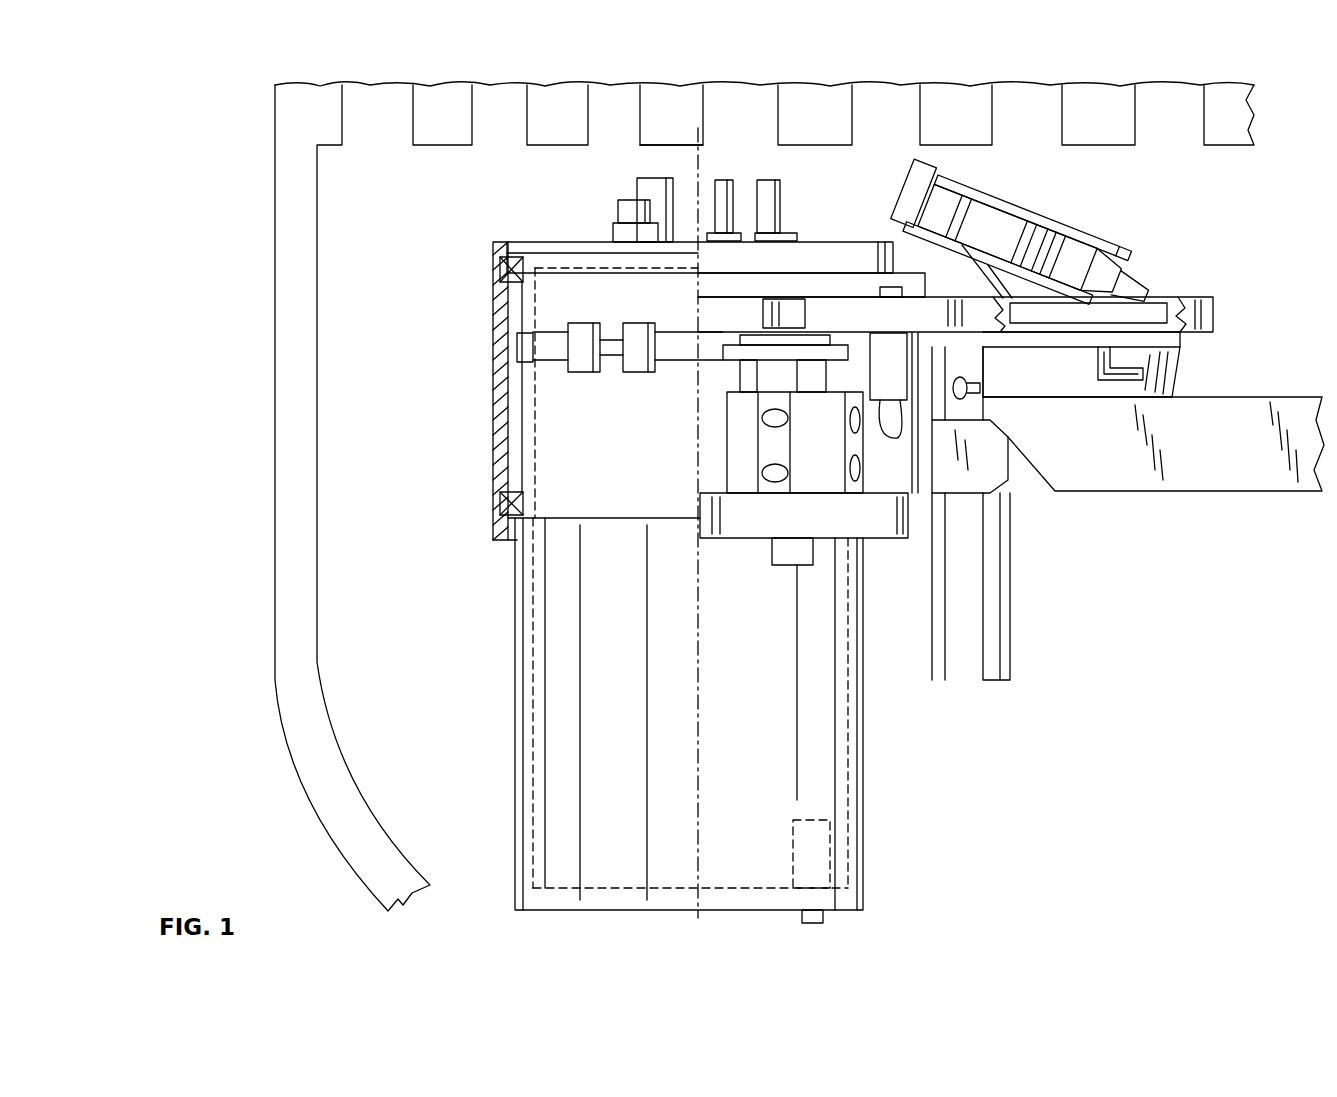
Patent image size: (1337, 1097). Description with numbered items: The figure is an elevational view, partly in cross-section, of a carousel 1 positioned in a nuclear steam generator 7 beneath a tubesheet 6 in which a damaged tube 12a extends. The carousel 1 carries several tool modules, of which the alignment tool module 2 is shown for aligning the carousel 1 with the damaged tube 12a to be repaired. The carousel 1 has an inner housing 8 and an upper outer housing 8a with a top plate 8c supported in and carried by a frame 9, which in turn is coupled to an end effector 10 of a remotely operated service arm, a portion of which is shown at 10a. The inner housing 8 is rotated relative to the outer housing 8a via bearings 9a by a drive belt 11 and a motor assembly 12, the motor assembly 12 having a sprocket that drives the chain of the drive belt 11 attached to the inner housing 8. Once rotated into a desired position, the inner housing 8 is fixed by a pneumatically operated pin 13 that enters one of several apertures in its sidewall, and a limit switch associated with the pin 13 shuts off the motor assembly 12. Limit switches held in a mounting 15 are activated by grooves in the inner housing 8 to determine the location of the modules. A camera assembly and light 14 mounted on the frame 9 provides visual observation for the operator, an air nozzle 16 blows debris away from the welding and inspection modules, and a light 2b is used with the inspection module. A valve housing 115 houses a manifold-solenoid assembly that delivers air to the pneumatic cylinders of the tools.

The carousel 1 is at (865, 805).
The alignment tool module 2 is at (623, 207).
The light 2b is at (772, 183).
The tubesheet 6 is at (458, 132).
The nuclear steam generator 7 is at (312, 441).
The inner housing 8 is at (868, 872).
The upper outer housing 8a is at (495, 448).
The top plate 8c is at (728, 900).
The frame 9 is at (977, 305).
The bearings 9a is at (498, 270).
The end effector 10 is at (1182, 377).
The remotely operated service arm portion 10a is at (1190, 490).
The drive belt 11 is at (542, 343).
The motor assembly 12 is at (830, 483).
The damaged tube 12a is at (638, 124).
The pneumatically operated pin 13 is at (970, 387).
The camera assembly and light 14 is at (1060, 222).
The mounting 15 is at (988, 487).
The air nozzle 16 is at (722, 182).
The valve housing 115 is at (1000, 680).